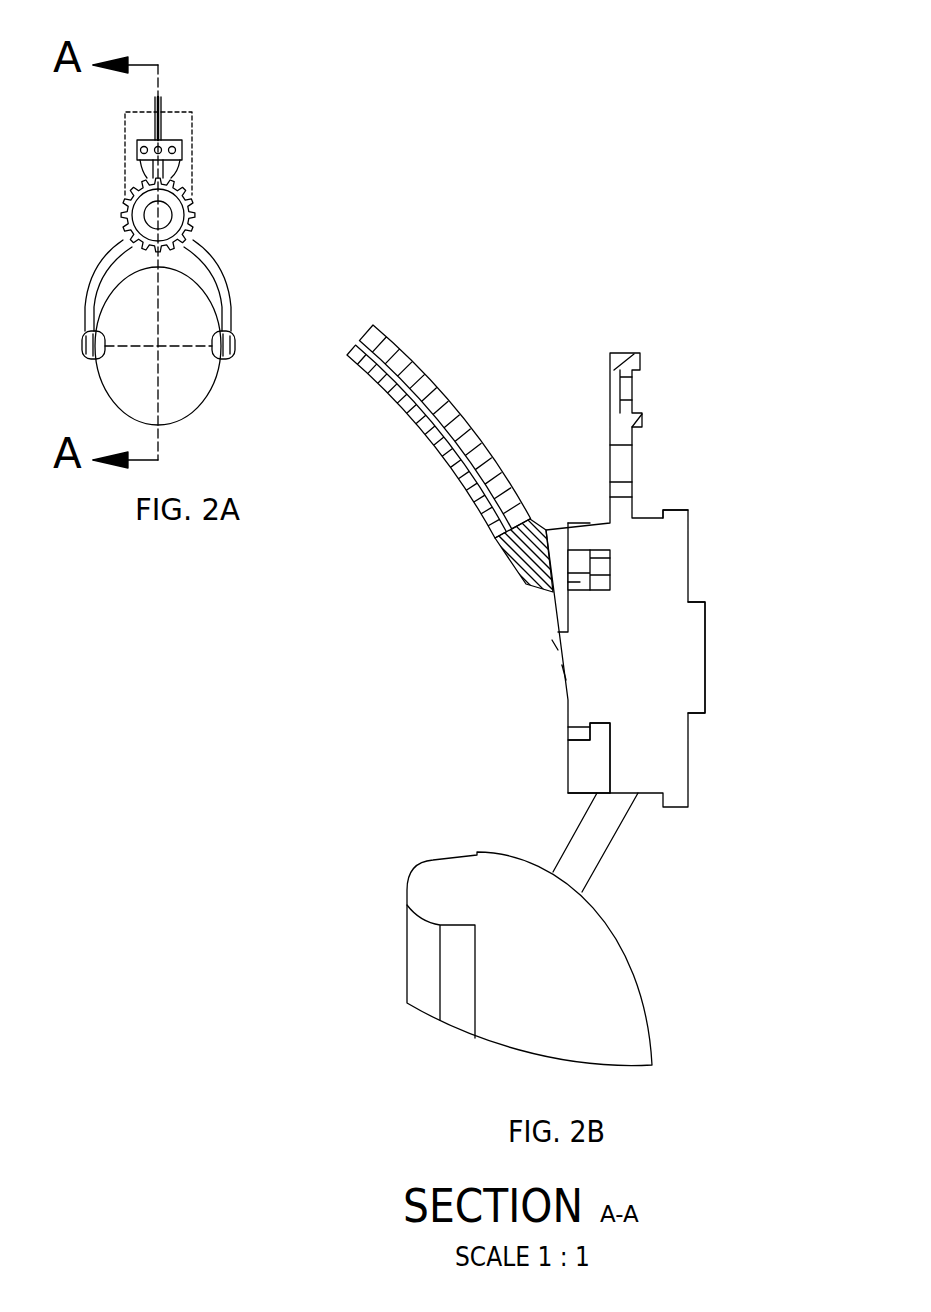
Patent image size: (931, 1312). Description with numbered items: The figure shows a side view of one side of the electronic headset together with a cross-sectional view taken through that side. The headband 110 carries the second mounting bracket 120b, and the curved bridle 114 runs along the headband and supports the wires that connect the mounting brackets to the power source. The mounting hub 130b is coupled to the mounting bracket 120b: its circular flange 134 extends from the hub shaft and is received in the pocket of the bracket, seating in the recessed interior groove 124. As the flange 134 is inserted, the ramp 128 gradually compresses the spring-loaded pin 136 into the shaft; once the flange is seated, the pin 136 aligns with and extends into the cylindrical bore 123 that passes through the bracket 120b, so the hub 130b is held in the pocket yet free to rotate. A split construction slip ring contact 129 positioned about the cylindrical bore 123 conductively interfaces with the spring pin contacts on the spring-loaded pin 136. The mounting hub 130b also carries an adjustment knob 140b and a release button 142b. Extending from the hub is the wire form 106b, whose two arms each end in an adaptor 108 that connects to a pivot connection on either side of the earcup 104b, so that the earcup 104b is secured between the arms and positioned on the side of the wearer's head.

In FIG. 2A, the earcup 104b is at (203, 384).
In FIG. 2B, the earcup 104b is at (620, 977).
In FIG. 2A, the wire form 106b is at (212, 270).
In FIG. 2B, the wire form 106b is at (614, 826).
In FIG. 2A, the adaptor 108 is at (82, 342).
In FIG. 2A, the headband 110 is at (187, 130).
In FIG. 2B, the headband 110 is at (420, 415).
In FIG. 2A, the curved bridle 114 is at (160, 115).
In FIG. 2B, the curved bridle 114 is at (442, 392).
In FIG. 2B, the second mounting bracket 120b is at (580, 778).
In FIG. 2B, the cylindrical bore 123 is at (560, 645).
In FIG. 2B, the recessed interior groove 124 is at (583, 560).
In FIG. 2B, the ramp 128 is at (563, 542).
In FIG. 2B, the split construction slip ring contact 129 is at (572, 613).
In FIG. 2A, the mounting hub 130b is at (168, 206).
In FIG. 2B, the mounting hub 130b is at (688, 738).
In FIG. 2B, the circular flange 134 is at (575, 582).
In FIG. 2B, the spring-loaded pin 136 is at (565, 672).
In FIG. 2B, the adjustment knob 140b is at (683, 513).
In FIG. 2A, the release button 142b is at (165, 217).
In FIG. 2B, the release button 142b is at (706, 642).